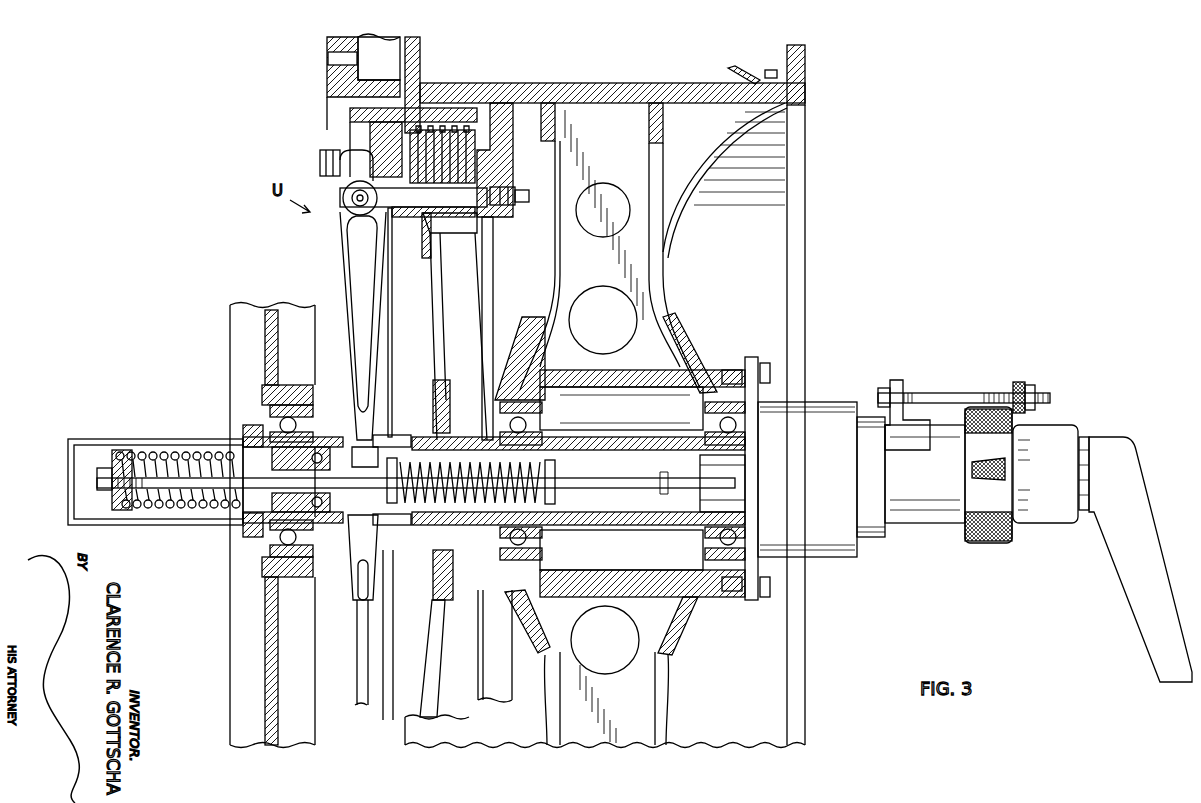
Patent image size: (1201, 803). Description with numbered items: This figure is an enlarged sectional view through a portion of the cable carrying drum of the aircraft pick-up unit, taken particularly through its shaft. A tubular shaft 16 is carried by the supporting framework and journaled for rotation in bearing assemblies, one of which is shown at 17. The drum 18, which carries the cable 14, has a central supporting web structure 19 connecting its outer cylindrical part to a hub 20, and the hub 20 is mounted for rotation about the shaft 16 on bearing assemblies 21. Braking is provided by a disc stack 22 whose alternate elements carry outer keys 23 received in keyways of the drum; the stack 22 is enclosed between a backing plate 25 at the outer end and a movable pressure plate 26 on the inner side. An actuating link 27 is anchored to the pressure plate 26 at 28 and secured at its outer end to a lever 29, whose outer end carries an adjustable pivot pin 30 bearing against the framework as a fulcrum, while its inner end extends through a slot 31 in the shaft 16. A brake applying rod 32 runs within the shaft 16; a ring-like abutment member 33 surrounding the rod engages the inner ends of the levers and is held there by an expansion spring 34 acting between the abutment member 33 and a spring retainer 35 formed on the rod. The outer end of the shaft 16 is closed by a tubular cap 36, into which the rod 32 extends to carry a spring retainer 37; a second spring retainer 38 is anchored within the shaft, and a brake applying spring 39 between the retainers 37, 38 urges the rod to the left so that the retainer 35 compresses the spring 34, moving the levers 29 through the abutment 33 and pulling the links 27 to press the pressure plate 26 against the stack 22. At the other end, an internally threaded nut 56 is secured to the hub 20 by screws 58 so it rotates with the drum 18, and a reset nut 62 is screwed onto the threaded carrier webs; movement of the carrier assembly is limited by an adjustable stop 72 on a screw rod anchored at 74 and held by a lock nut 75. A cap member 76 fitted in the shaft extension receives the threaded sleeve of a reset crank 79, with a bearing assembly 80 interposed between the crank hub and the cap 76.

The cable 14 is at (742, 72).
The tubular shaft 16 is at (331, 522).
The bearing assembly 17 is at (308, 421).
The drum 18 is at (627, 85).
The central supporting web structure 19 is at (660, 135).
The hub 20 is at (625, 372).
The bearing assemblies 21 is at (543, 410).
The disc stack 22 is at (458, 150).
The outer keys 23 is at (430, 132).
The backing plate 25 is at (385, 145).
The pressure plate 26 is at (510, 165).
The actuating link 27 is at (398, 208).
The link anchorage 28 is at (506, 207).
The lever 29 is at (348, 262).
The adjustable pivot pin 30 is at (318, 162).
The slot 31 is at (397, 436).
The brake applying rod 32 is at (605, 478).
The ring-like abutment member 33 is at (374, 500).
The expansion spring 34 is at (548, 500).
The spring retainer 35 is at (556, 470).
The tubular cap 36 is at (172, 439).
The spring retainer 37 is at (110, 463).
The second spring retainer 38 is at (337, 447).
The brake applying spring 39 is at (178, 520).
The internally threaded nut 56 is at (835, 402).
The screws 58 is at (768, 378).
The reset nut 62 is at (993, 545).
The adjustable stop 72 is at (1017, 383).
The screw rod anchorage 74 is at (905, 396).
The lock nut 75 is at (1032, 387).
The cap member 76 is at (1074, 426).
The reset crank 79 is at (1135, 572).
The bearing assembly 80 is at (1088, 440).